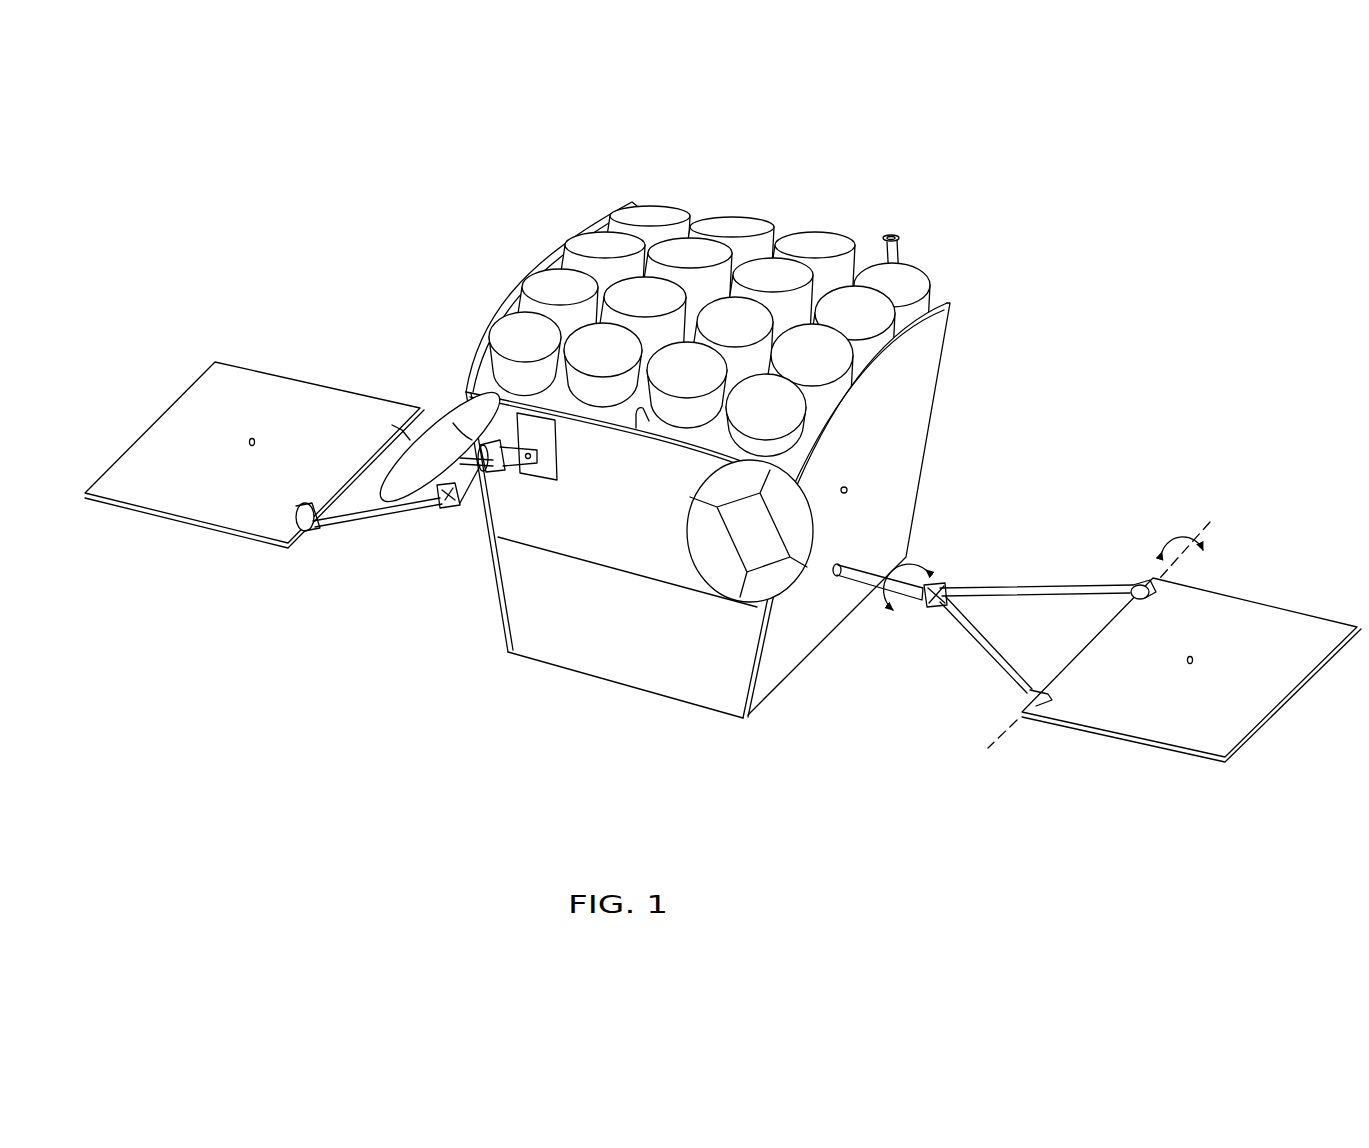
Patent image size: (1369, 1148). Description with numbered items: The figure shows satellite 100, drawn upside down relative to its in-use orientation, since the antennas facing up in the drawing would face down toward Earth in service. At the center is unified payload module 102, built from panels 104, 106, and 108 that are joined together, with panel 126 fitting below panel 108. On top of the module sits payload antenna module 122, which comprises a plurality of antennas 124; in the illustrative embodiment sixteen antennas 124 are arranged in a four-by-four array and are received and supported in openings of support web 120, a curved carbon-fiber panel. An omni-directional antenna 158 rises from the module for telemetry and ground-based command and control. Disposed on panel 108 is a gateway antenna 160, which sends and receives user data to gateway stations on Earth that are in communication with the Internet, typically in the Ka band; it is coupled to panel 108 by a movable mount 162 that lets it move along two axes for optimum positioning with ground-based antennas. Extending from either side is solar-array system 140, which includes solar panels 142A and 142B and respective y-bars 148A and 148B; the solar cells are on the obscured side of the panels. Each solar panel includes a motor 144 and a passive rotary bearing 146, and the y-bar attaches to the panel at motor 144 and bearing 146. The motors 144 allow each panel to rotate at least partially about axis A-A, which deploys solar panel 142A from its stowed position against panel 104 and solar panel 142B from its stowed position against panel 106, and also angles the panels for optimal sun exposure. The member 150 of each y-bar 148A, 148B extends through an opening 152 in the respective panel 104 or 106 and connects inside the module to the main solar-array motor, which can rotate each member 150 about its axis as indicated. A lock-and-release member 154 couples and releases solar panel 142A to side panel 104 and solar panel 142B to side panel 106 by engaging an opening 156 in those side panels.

The satellite 100 is at (1066, 213).
The unified payload module 102 is at (746, 421).
The panel 104 is at (920, 414).
The panel 106 is at (500, 300).
The panel 108 is at (630, 511).
The support web 120 is at (637, 428).
The payload antenna module 122 is at (709, 290).
The antenna 124 is at (728, 219).
The panel 126 is at (630, 634).
The solar-array system 140 is at (714, 613).
The solar panel 142A is at (1160, 638).
The solar panel 142B is at (254, 445).
The motor 144 is at (1138, 584).
The passive rotary bearing 146 is at (1050, 706).
The y-bar 148A is at (969, 559).
The y-bar 148B is at (438, 537).
The member 150 is at (858, 583).
The opening 152 is at (844, 563).
The lock-and-release member 154 is at (262, 430).
The opening 156 is at (849, 486).
The omni-directional antenna 158 is at (893, 236).
The gateway antenna 160 is at (690, 515).
The movable mount 162 is at (500, 470).